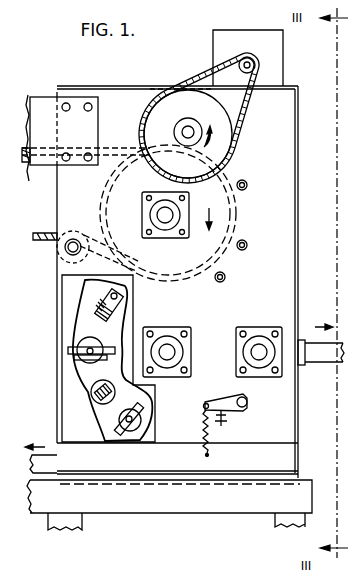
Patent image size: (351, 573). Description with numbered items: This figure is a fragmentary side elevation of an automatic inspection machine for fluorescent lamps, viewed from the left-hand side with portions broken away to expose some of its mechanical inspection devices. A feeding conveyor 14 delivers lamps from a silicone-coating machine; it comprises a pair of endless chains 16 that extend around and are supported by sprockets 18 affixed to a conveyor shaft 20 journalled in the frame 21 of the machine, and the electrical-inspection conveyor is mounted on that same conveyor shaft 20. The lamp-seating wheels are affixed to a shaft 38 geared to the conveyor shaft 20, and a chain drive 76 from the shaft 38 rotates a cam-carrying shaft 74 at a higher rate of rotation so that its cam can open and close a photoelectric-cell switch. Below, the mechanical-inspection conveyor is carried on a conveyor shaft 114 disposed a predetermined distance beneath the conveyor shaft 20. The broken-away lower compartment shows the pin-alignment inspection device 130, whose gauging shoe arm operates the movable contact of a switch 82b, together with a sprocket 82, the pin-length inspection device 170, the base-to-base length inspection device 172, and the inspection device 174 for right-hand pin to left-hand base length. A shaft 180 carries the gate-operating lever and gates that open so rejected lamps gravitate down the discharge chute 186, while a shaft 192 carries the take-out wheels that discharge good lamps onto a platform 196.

The feeding conveyor 14 is at (49, 92).
The endless chains 16 is at (39, 232).
The sprockets 18 is at (112, 188).
The conveyor shaft 20 is at (165, 222).
The frame 21 is at (298, 253).
The shaft 38 is at (189, 126).
The shaft 74 is at (259, 64).
The chain drive 76 is at (205, 68).
The sprocket 82 is at (98, 251).
The switch 82b is at (112, 316).
The conveyor shaft 114 is at (170, 352).
The pin-alignment inspection device 130 is at (82, 313).
The pin-length inspection device 170 is at (75, 362).
The base-to-base length inspection device 172 is at (89, 393).
The inspection device 174 is at (117, 420).
The shaft 180 is at (247, 405).
The discharge chute 186 is at (50, 467).
The shaft 192 is at (259, 348).
The platform 196 is at (324, 362).